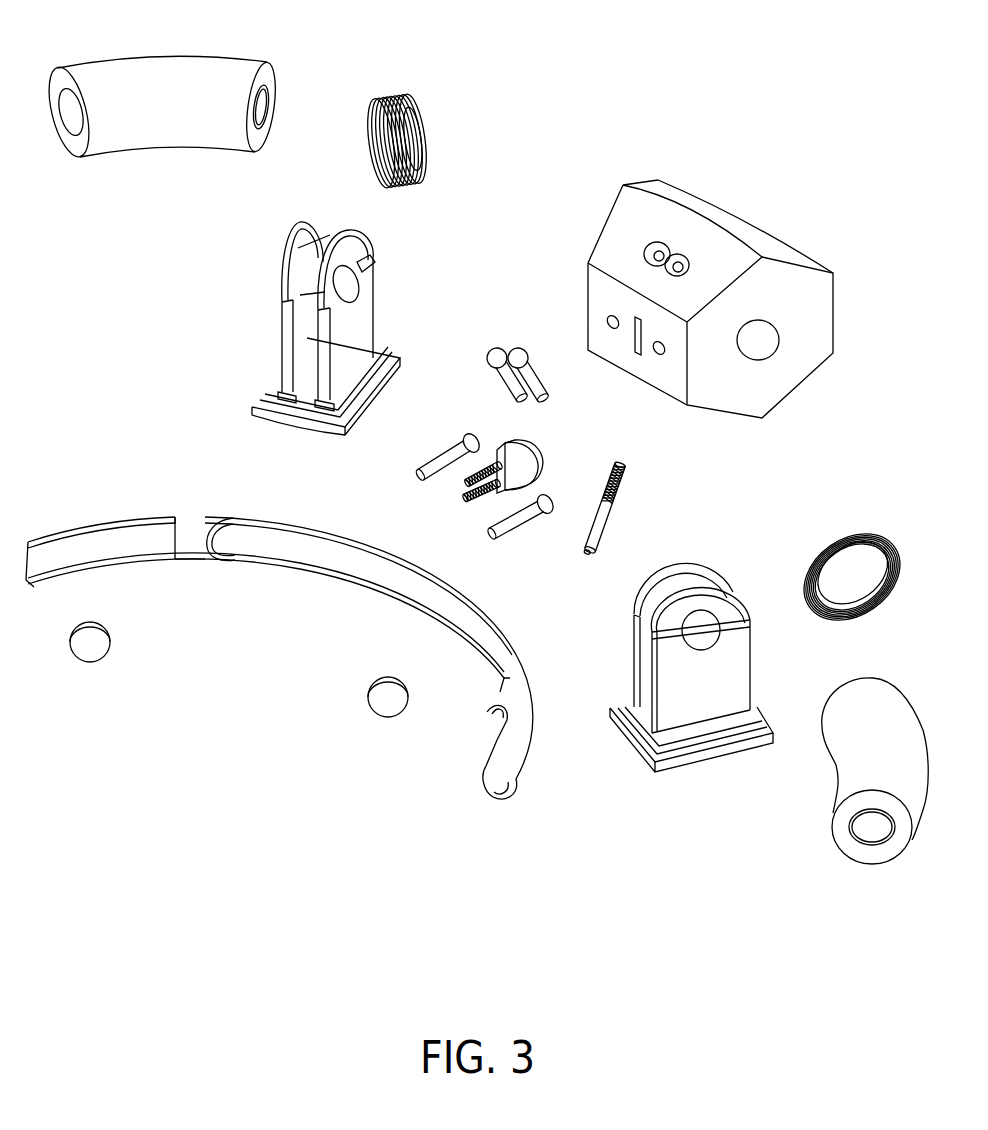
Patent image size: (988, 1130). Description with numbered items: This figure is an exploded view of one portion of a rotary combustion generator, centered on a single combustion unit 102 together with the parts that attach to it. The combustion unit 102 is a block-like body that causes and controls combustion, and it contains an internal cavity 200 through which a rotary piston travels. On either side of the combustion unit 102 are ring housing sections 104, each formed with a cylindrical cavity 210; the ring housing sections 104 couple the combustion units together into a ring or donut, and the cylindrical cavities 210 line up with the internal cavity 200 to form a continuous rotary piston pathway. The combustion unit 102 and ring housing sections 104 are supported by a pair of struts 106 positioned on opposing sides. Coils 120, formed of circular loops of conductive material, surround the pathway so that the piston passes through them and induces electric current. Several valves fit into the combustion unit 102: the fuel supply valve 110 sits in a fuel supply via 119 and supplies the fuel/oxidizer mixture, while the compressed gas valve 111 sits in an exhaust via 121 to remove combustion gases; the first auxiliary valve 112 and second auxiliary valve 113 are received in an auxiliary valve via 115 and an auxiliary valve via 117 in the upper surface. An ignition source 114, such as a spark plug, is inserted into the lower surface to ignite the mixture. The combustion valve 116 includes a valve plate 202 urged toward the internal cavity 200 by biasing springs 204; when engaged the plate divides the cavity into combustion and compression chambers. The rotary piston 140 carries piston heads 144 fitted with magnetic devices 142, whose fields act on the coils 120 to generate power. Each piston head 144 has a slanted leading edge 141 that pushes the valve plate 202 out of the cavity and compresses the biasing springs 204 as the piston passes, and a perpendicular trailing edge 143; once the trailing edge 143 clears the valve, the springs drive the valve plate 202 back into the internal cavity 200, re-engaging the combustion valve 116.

The combustion unit 102 is at (774, 184).
The ring housing section 104 is at (160, 54).
The strut 106 is at (259, 345).
The fuel supply valve 110 is at (531, 541).
The compressed gas valve 111 is at (452, 443).
The first auxiliary valve 112 is at (493, 349).
The second auxiliary valve 113 is at (517, 349).
The ignition source 114 is at (620, 517).
The auxiliary valve via 115 is at (657, 244).
The combustion valve 116 is at (547, 466).
The auxiliary valve via 117 is at (680, 255).
The fuel supply via 119 is at (658, 360).
The coil 120 is at (410, 92).
The exhaust via 121 is at (612, 334).
The rotary piston 140 is at (512, 811).
The leading edge 141 is at (232, 566).
The magnetic device 142 is at (165, 568).
The trailing edge 143 is at (169, 522).
The piston head 144 is at (197, 585).
The internal cavity 200 is at (769, 349).
The valve plate 202 is at (532, 432).
The biasing spring 204 is at (456, 486).
The cylindrical cavity 210 is at (267, 107).